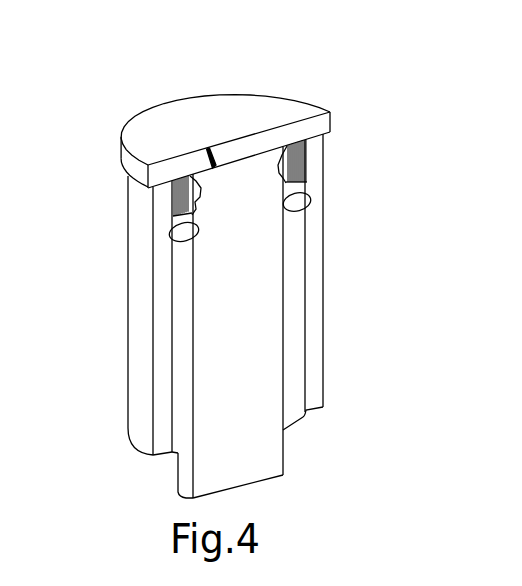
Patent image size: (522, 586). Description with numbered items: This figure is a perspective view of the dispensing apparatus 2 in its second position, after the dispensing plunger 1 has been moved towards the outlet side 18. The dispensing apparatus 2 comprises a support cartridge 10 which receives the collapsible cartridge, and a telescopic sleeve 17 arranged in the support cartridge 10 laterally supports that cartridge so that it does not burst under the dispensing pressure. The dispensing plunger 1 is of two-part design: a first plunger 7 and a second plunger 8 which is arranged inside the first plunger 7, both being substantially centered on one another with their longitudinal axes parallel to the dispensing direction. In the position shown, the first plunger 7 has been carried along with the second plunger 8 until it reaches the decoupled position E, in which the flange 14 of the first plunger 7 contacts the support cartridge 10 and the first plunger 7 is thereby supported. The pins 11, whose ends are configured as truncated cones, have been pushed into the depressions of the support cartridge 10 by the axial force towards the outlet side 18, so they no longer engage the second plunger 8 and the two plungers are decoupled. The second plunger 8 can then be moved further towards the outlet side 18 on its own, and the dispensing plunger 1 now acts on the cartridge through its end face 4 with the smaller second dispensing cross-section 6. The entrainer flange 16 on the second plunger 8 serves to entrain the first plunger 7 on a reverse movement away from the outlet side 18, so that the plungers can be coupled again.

The dispensing plunger 1 is at (324, 303).
The dispensing apparatus 2 is at (235, 112).
The end face 4 is at (207, 150).
The second dispensing cross-section 6 is at (258, 155).
The first plunger 7 is at (126, 323).
The second plunger 8 is at (190, 478).
The support cartridge 10 is at (155, 253).
The pins 11 is at (300, 207).
The flange 14 is at (305, 417).
The entrainer flange 16 is at (148, 166).
The sleeve 17 is at (303, 165).
The outlet side 18 is at (238, 118).
The decoupled position E is at (162, 431).